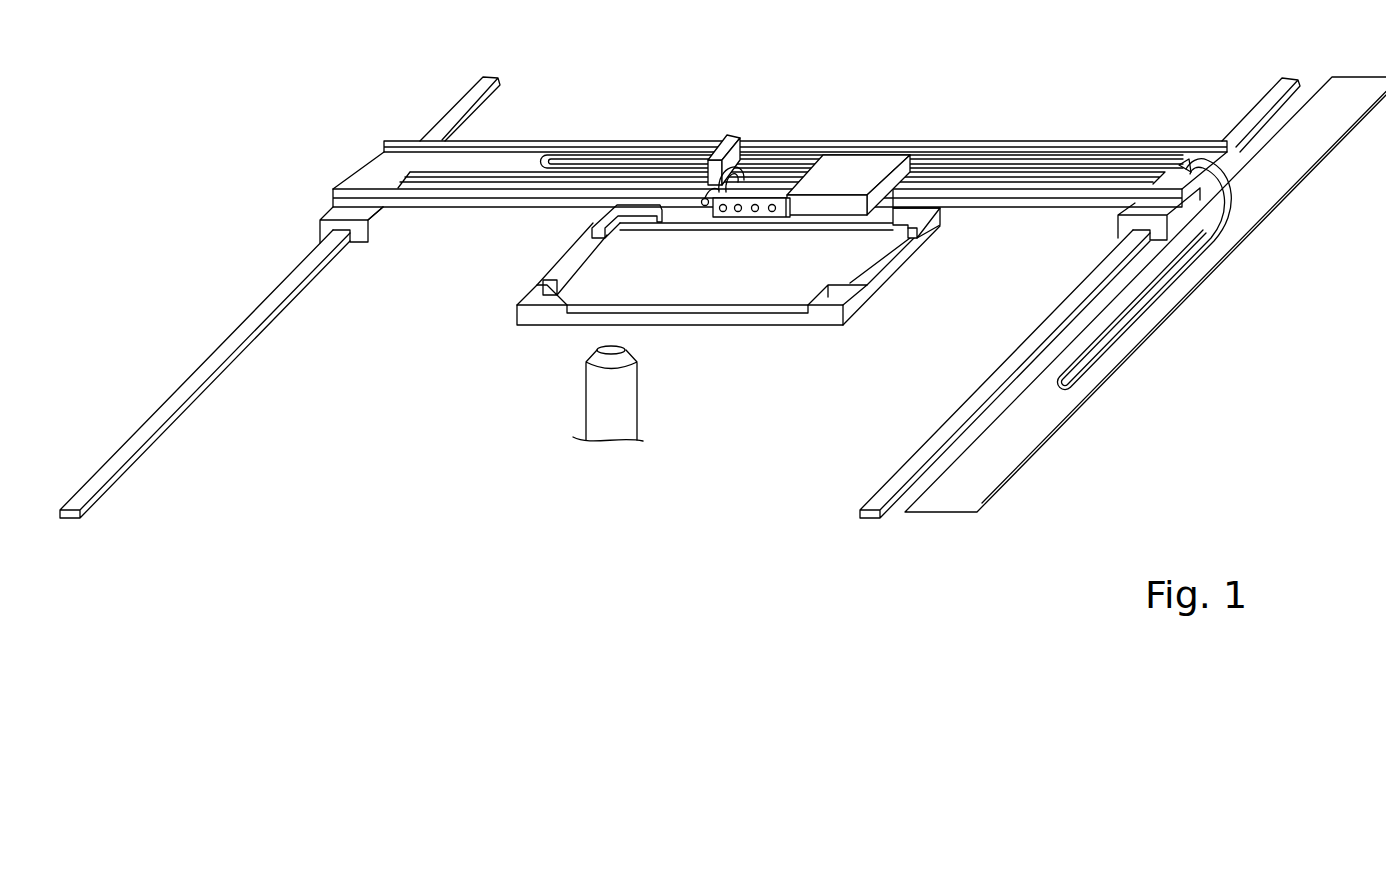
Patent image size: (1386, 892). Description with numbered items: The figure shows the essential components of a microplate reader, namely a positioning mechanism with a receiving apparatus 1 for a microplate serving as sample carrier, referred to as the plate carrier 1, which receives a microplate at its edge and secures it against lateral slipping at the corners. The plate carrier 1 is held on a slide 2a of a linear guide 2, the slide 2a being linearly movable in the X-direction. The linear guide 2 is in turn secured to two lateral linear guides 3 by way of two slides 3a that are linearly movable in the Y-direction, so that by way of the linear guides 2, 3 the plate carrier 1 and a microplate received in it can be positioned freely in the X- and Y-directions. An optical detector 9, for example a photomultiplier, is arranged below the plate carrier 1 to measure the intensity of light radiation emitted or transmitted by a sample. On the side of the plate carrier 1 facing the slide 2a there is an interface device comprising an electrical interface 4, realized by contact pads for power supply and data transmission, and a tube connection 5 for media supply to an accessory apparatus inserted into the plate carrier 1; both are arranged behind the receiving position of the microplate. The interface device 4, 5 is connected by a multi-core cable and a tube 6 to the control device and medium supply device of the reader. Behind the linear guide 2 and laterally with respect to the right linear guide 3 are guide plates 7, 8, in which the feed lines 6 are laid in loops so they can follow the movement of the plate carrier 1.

The receiving apparatus 1 is at (767, 318).
The linear guide 2 is at (437, 200).
The slide 2a is at (852, 167).
The lateral linear guide 3 is at (197, 381).
The slide 3a is at (333, 217).
The electrical interface 4 is at (771, 214).
The tube connection 5 is at (703, 206).
The feed lines 6 is at (673, 163).
The guide plate 7 is at (497, 140).
The guide plate 8 is at (1038, 448).
The optical detector 9 is at (607, 405).